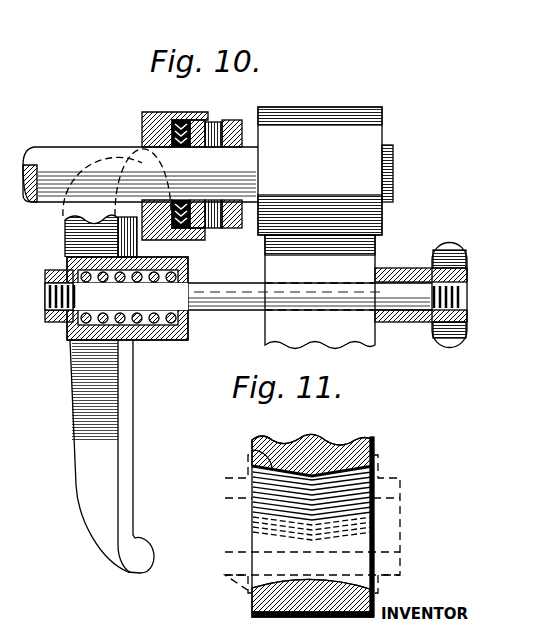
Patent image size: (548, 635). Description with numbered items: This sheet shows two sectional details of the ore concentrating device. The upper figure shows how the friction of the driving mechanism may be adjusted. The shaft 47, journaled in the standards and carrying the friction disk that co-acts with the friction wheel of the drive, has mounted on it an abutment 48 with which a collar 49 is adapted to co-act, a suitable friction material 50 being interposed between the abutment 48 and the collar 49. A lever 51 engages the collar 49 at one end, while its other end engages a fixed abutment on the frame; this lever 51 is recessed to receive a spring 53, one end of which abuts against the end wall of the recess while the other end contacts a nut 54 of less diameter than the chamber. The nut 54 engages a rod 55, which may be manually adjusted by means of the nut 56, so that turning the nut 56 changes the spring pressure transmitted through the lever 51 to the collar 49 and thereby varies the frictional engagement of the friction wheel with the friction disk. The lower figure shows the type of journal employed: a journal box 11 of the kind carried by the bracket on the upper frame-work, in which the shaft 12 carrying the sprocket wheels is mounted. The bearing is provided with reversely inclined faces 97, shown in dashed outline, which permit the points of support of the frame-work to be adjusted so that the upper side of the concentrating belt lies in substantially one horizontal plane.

In FIG. 10, the shaft 47 is at (61, 162).
In FIG. 10, the abutment 48 is at (232, 128).
In FIG. 10, the collar 49 is at (142, 132).
In FIG. 10, the friction material 50 is at (192, 120).
In FIG. 10, the lever 51 is at (90, 433).
In FIG. 10, the spring 53 is at (143, 333).
In FIG. 10, the nut 54 is at (60, 323).
In FIG. 10, the rod 55 is at (210, 292).
In FIG. 10, the nut 56 is at (442, 257).
In FIG. 11, the journal boxes 11 is at (340, 457).
In FIG. 11, the shaft 12 is at (400, 496).
In FIG. 11, the reversely inclined faces 97 is at (254, 448).